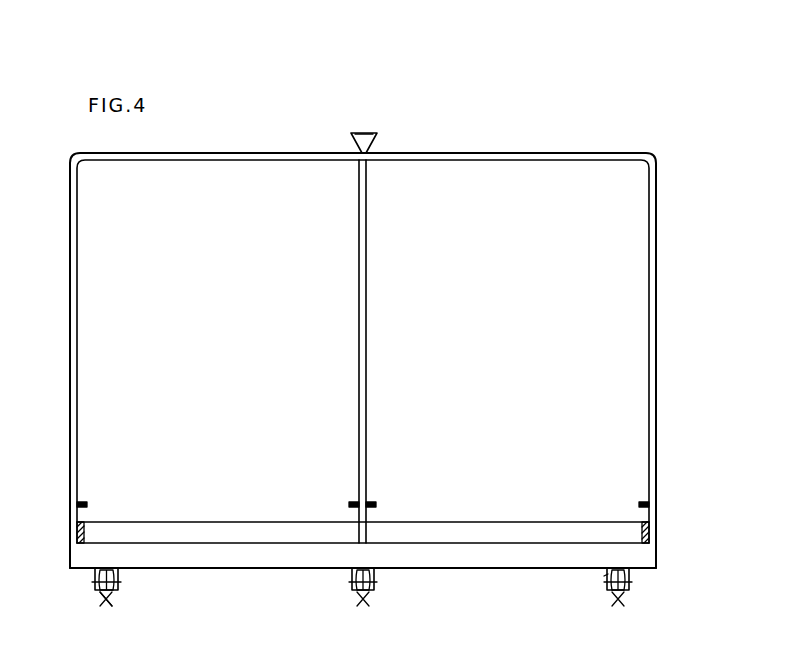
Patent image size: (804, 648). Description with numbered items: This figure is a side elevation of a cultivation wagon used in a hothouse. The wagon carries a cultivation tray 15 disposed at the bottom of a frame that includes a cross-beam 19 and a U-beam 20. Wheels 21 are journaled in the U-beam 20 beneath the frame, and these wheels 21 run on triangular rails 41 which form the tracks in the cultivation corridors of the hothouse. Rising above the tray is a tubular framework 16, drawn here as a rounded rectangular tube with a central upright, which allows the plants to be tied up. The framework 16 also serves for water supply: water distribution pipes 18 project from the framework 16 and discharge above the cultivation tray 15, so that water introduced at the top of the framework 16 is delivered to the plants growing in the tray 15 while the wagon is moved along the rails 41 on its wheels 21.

The cultivation tray 15 is at (207, 528).
The tubular framework 16 is at (229, 158).
The water distribution pipes 18 is at (88, 503).
The cross-beam 19 is at (506, 557).
The U-beam 20 is at (606, 574).
The wheels 21 is at (118, 598).
The triangular rails 41 is at (106, 596).